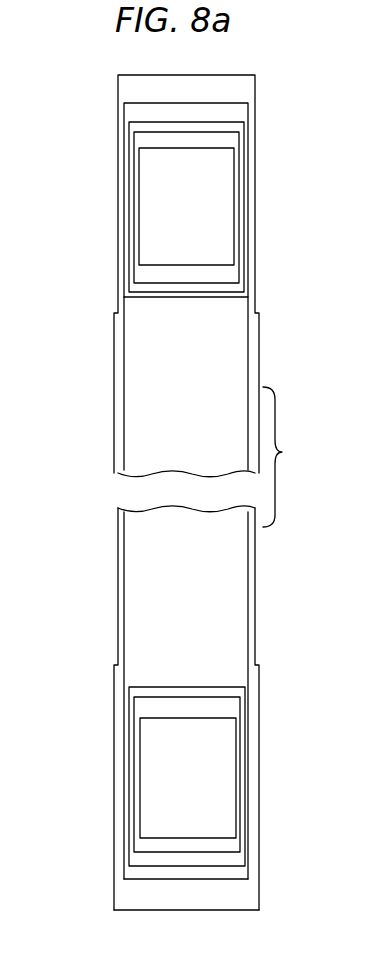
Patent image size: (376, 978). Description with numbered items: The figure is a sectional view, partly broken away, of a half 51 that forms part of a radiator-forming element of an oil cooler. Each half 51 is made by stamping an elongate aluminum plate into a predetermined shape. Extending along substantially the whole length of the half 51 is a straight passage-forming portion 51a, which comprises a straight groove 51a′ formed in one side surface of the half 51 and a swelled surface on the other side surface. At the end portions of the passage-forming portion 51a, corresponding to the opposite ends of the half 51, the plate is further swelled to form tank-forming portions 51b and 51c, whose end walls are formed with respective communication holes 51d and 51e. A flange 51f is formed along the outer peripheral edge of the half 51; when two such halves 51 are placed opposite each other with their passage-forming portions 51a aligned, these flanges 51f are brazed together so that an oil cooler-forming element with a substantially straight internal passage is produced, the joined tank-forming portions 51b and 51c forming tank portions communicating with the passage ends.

The half 51 is at (259, 173).
The passage-forming portion 51a is at (259, 573).
The straight groove 51a′ is at (215, 388).
The tank-forming portion 51b is at (143, 139).
The tank-forming portion 51c is at (137, 862).
The communication hole 51d is at (218, 247).
The communication hole 51e is at (220, 775).
The flange 51f is at (190, 902).